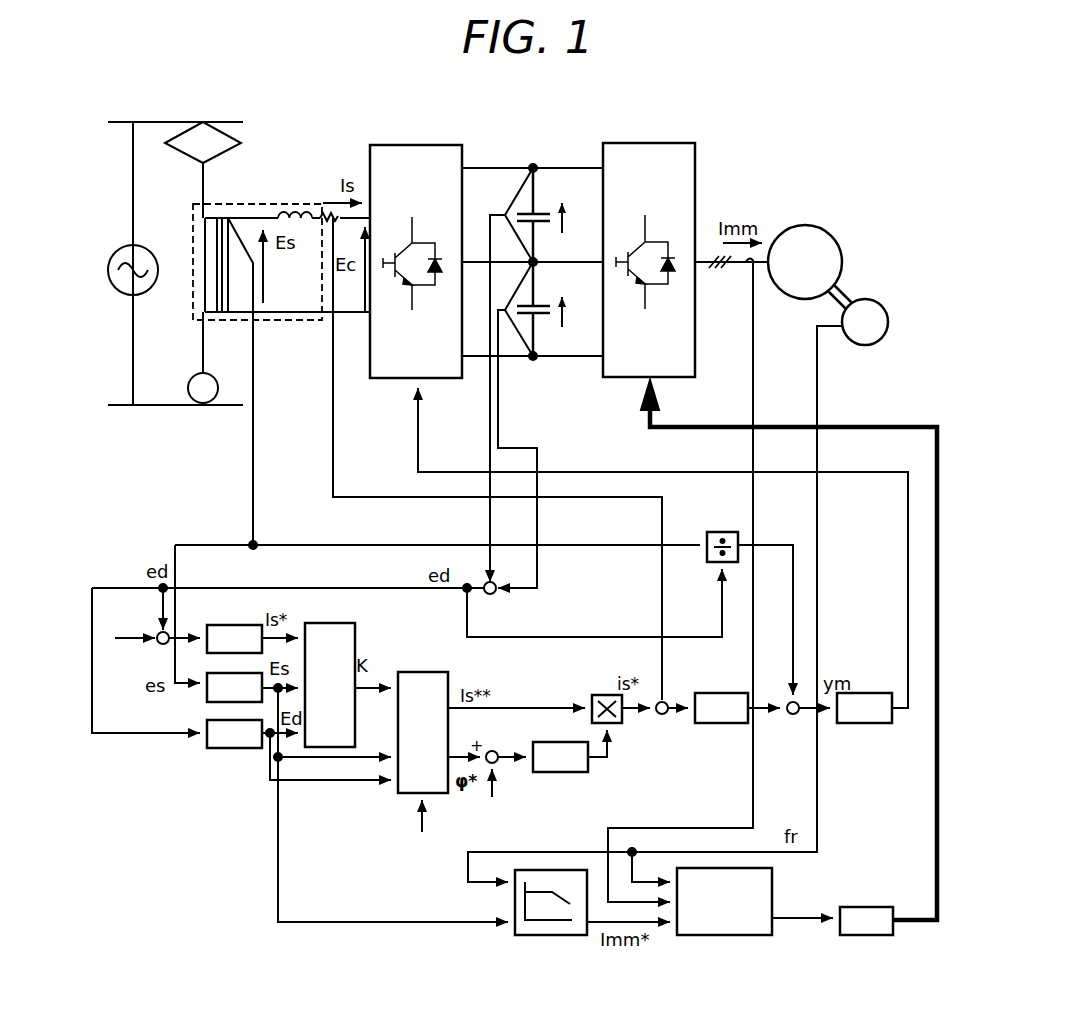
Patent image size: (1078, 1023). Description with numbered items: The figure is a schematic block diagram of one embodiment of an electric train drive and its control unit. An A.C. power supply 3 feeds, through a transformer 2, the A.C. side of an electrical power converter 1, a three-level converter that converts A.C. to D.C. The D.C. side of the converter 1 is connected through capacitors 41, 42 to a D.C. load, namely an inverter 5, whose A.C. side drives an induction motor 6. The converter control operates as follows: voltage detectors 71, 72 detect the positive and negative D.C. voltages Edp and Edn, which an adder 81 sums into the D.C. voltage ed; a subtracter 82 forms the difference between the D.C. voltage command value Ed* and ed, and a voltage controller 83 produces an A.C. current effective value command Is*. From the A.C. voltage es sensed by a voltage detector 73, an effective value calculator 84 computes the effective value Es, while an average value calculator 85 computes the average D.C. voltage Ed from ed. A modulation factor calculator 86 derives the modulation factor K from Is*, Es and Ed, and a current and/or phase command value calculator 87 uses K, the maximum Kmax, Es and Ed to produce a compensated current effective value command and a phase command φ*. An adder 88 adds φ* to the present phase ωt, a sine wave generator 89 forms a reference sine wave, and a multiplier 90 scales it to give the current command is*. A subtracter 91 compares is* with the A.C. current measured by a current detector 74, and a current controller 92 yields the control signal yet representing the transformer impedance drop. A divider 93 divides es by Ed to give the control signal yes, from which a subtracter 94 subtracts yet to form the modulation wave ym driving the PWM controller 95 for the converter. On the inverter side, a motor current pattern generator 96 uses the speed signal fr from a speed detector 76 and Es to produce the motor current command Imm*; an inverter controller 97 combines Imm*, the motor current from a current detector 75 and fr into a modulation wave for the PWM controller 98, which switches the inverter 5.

The electrical power converter 1 is at (467, 145).
The transformer 2 is at (245, 204).
The A.C. power supply 3 is at (153, 254).
The inverter 5 is at (666, 145).
The induction motor 6 is at (820, 226).
The capacitor 41 is at (542, 208).
The capacitor 42 is at (542, 303).
The voltage detector 71 is at (508, 212).
The voltage detector 72 is at (516, 306).
The voltage detector 73 is at (240, 314).
The current detector 74 is at (326, 212).
The current detector 75 is at (748, 268).
The speed detector 76 is at (880, 302).
The adder 81 is at (484, 582).
The subtracter 82 is at (156, 636).
The voltage controller 83 is at (209, 625).
The effective value calculator 84 is at (210, 673).
The average value calculator 85 is at (207, 726).
The modulation factor calculator 86 is at (343, 623).
The current and/or phase command value calculator 87 is at (419, 670).
The adder 88 is at (497, 752).
The sine wave generator 89 is at (560, 773).
The multiplier 90 is at (594, 694).
The subtracter 91 is at (666, 714).
The current controller 92 is at (718, 723).
The divider 93 is at (708, 532).
The subtracter 94 is at (793, 714).
The PWM controller 95 is at (866, 723).
The motor current pattern generator 96 is at (550, 935).
The inverter controller 97 is at (745, 935).
The PWM controller 98 is at (873, 935).